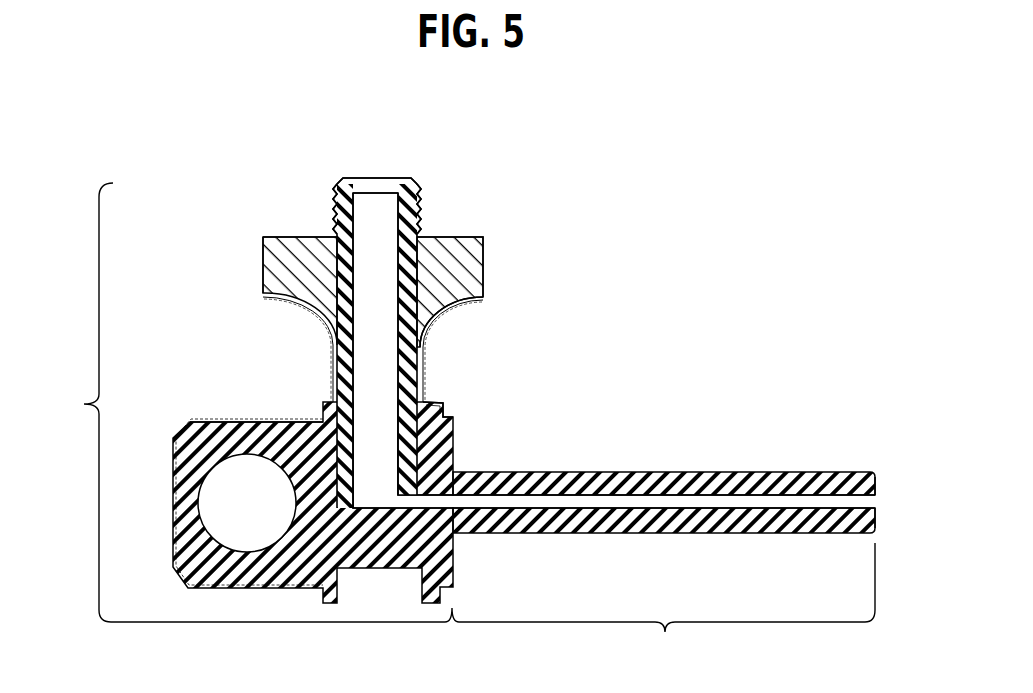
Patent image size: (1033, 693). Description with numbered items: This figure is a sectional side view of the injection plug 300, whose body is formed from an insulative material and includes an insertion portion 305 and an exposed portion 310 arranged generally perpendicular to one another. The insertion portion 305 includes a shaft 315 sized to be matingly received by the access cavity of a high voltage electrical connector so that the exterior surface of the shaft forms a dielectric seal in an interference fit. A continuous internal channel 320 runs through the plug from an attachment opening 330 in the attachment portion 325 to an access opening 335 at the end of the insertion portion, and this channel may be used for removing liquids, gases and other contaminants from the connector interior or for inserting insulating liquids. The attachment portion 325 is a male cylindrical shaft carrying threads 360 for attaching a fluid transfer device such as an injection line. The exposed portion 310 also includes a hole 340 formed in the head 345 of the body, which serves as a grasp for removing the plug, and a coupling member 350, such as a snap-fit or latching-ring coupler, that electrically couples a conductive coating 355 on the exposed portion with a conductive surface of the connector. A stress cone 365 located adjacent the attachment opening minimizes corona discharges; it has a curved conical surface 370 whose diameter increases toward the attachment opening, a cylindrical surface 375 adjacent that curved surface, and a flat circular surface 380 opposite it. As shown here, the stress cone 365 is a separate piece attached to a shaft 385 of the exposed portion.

The injection plug 300 is at (638, 228).
The insertion portion 305 is at (682, 523).
The exposed portion 310 is at (84, 404).
The shaft 315 is at (777, 477).
The continuous internal channel 320 is at (382, 250).
The attachment portion 325 is at (423, 190).
The attachment opening 330 is at (373, 197).
The access opening 335 is at (870, 503).
The hole 340 is at (223, 505).
The head 345 is at (228, 432).
The coupling member 350 is at (433, 399).
The conductive coating 355 is at (328, 378).
The threads 360 is at (333, 197).
The stress cone 365 is at (277, 235).
The curved conical surface 370 is at (465, 305).
The cylindrical surface 375 is at (263, 271).
The flat circular surface 380 is at (303, 236).
The shaft 385 is at (418, 277).